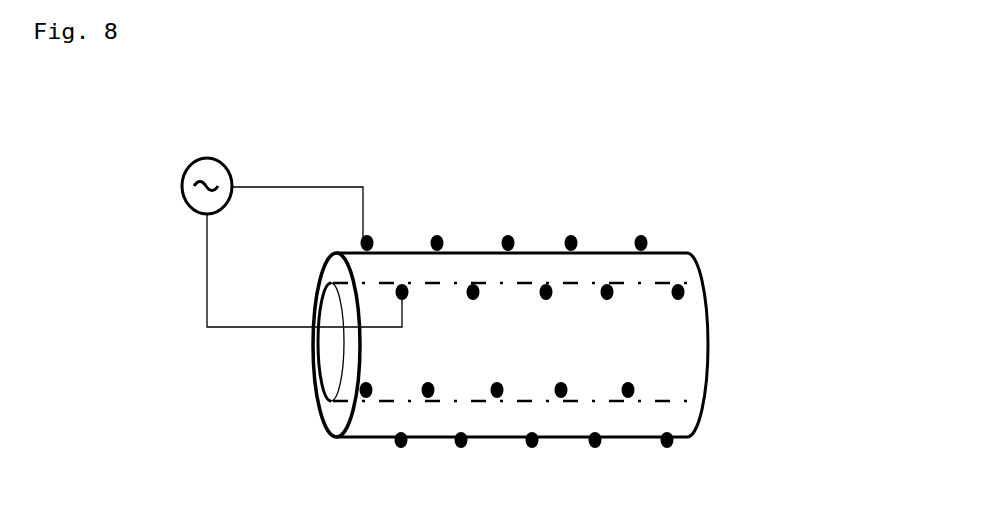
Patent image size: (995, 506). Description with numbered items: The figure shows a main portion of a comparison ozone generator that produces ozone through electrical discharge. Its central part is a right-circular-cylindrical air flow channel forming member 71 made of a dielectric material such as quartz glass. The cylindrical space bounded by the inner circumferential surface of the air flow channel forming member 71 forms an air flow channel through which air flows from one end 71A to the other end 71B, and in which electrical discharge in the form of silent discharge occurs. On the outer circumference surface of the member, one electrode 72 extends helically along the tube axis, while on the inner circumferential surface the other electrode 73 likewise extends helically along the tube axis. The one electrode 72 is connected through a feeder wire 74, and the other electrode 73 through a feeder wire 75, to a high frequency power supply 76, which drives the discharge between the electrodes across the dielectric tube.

The air flow channel forming member 71 is at (597, 252).
The one end 71A is at (330, 367).
The other end 71B is at (710, 357).
The one electrode 72 is at (437, 235).
The other electrode 73 is at (681, 302).
The feeder wire 74 is at (322, 185).
The feeder wire 75 is at (249, 328).
The high frequency power supply 76 is at (222, 161).